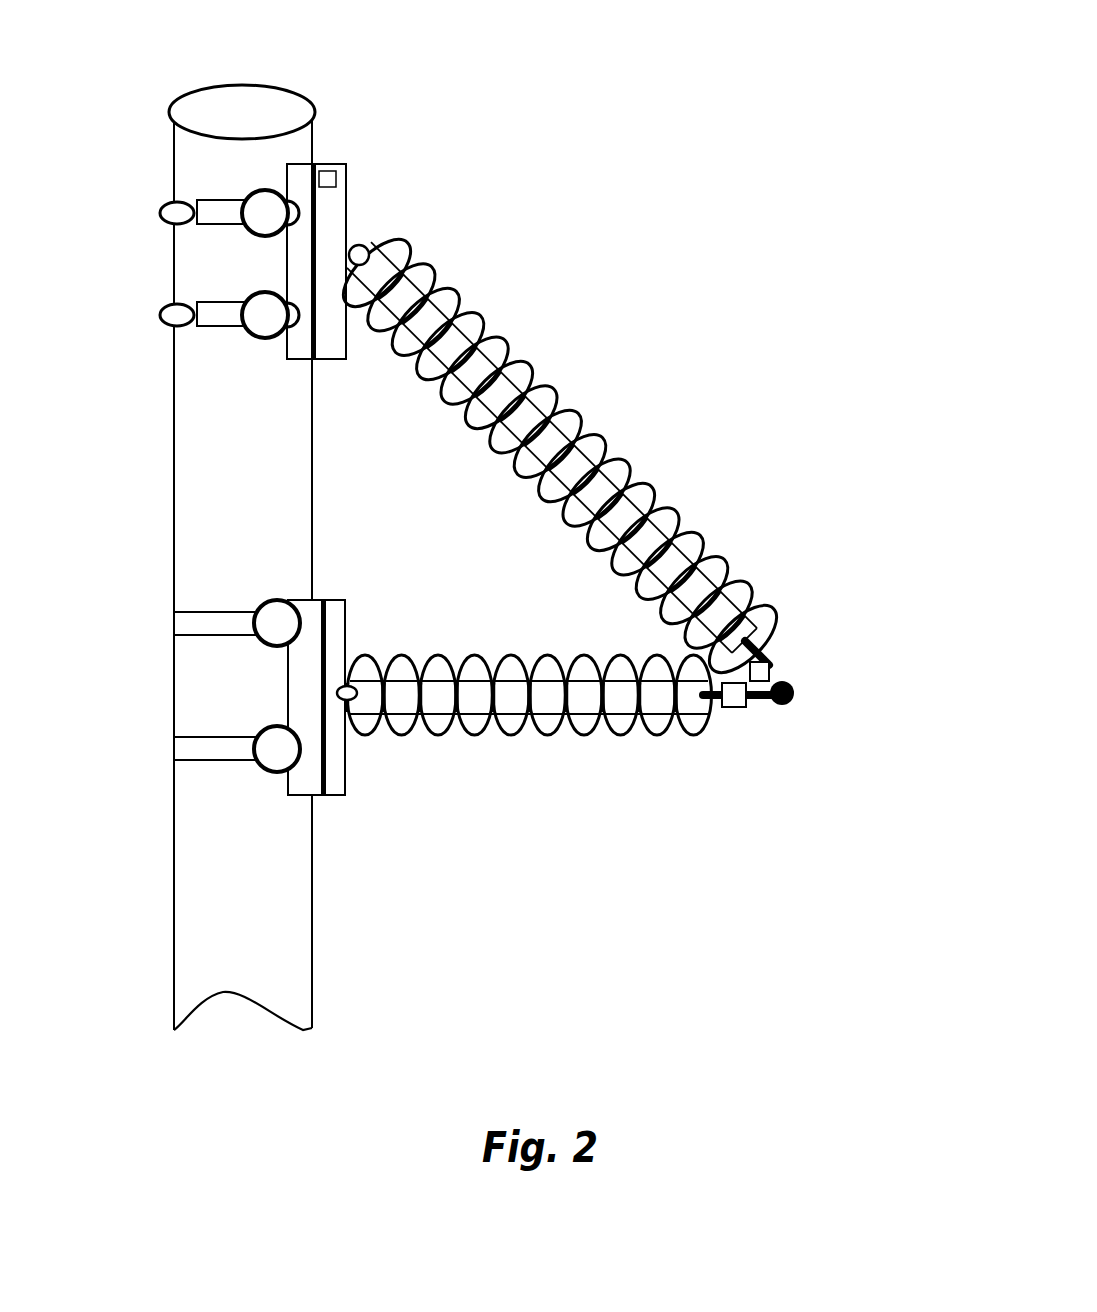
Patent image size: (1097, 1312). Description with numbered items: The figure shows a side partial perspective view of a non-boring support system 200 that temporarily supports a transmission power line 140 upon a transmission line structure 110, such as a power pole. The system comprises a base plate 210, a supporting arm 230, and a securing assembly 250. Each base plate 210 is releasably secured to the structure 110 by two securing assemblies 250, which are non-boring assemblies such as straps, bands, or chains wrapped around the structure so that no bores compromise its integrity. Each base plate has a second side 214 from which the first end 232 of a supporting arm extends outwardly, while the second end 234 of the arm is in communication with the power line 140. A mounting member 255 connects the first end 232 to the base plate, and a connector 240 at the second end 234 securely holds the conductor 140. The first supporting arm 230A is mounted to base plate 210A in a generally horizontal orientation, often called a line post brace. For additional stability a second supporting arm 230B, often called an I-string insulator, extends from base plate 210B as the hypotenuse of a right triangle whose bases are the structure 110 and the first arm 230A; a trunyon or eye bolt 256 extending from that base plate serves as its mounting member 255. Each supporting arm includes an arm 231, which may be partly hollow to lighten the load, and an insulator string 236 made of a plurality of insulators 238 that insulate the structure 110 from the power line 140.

The non-boring support system 200 is at (683, 150).
The transmission line structure 110 is at (305, 1038).
The securing assembly 250 is at (178, 737).
The base plate 210 is at (368, 493).
The base plate 210A is at (354, 768).
The base plate 210B is at (368, 190).
The second side 214 is at (349, 625).
The eye bolt 256 is at (352, 245).
The mounting member 255 is at (361, 244).
The supporting arm 230 is at (572, 571).
The first supporting arm 230A is at (503, 742).
The second supporting arm 230B is at (573, 423).
The arm 231 is at (435, 695).
The first end 232 is at (369, 259).
The insulator string 236 is at (633, 490).
The insulator 238 is at (697, 557).
The second end 234 is at (765, 654).
The connector 240 is at (772, 678).
The transmission power line 140 is at (790, 697).